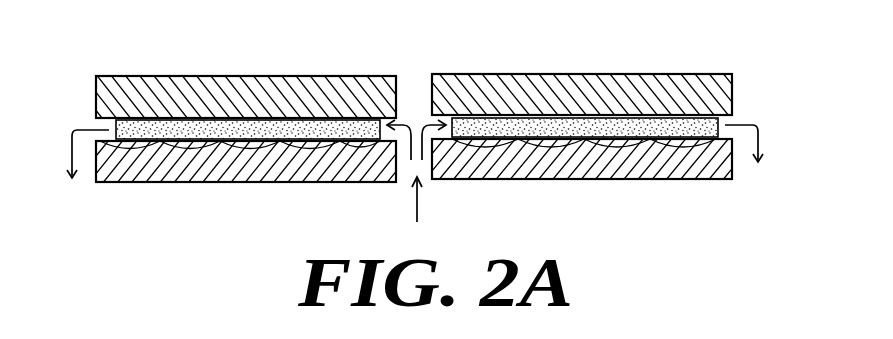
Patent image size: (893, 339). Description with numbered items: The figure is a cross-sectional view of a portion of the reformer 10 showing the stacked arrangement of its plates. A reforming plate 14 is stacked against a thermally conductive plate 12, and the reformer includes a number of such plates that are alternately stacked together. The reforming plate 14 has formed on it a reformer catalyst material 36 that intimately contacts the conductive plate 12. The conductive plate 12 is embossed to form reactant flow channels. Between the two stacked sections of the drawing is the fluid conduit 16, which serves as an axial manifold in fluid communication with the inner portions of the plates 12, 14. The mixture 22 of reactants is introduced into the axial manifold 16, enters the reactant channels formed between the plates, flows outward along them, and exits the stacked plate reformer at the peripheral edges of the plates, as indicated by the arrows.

The reformer 10 is at (723, 41).
The thermally conductive plate 12 is at (110, 178).
The reforming plate 14 is at (96, 100).
The fluid conduit 16 is at (429, 181).
The mixture 22 is at (416, 204).
The reformer catalyst material 36 is at (200, 128).